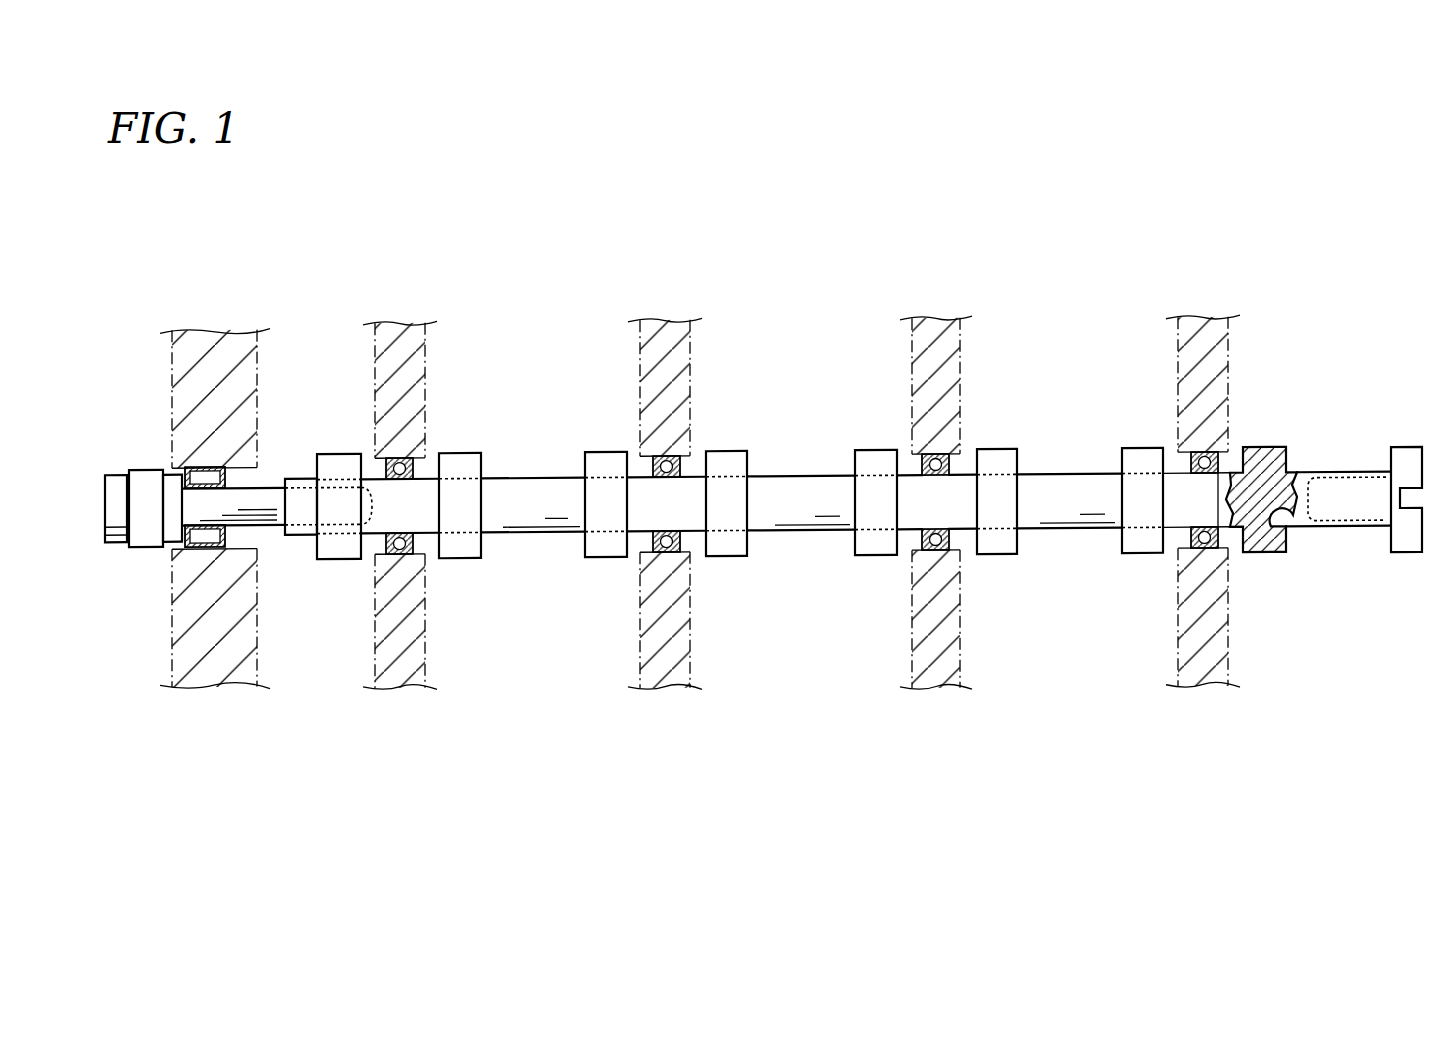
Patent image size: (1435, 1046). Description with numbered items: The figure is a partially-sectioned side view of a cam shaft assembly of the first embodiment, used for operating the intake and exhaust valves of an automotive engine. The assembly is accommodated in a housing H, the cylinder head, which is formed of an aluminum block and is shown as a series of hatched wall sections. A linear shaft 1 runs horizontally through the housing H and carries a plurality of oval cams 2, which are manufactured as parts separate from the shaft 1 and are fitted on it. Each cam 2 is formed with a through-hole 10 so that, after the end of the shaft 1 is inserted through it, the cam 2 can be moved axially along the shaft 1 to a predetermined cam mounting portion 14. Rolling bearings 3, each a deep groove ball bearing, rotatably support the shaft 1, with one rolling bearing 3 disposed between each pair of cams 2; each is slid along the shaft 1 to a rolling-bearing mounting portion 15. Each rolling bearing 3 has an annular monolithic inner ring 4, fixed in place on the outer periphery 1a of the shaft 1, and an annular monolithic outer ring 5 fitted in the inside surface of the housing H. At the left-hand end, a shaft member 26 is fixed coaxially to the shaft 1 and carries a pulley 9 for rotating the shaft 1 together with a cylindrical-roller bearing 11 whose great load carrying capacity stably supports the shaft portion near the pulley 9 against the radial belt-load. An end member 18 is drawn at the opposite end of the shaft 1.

The shaft 1 is at (1308, 470).
The outer periphery of shaft 1a is at (1055, 473).
The cam 2 is at (342, 565).
The rolling bearing 3 is at (407, 456).
The inner ring 4 is at (917, 468).
The outer ring 5 is at (952, 457).
The pulley 9 is at (148, 555).
The through-hole 10 is at (1297, 512).
The cylindrical-roller bearing 11 is at (200, 466).
The cam mounting portion 14 is at (1273, 466).
The rolling-bearing mounting portion 15 is at (1207, 457).
The end cap 18 is at (1404, 447).
The shaft member 26 is at (255, 528).
The housing H is at (375, 400).